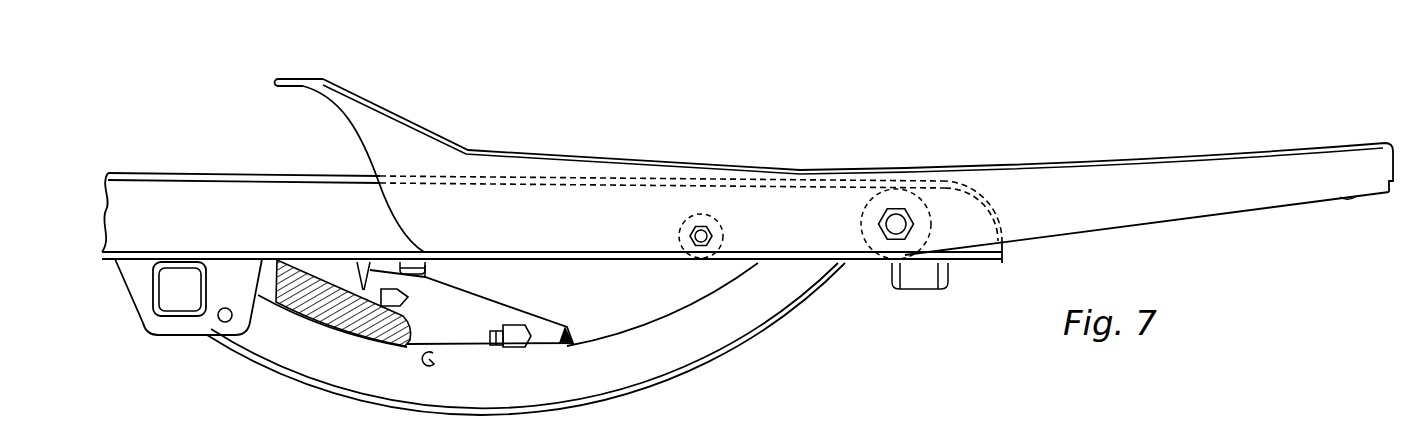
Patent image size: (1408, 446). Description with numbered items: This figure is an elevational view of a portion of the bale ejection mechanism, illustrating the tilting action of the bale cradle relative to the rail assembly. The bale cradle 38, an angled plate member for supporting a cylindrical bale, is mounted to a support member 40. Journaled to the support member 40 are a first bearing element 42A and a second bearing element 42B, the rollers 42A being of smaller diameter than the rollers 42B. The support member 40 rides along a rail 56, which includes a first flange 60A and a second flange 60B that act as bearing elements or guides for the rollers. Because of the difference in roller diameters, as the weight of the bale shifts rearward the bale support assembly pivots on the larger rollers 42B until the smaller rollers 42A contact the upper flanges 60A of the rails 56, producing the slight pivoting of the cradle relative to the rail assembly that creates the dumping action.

The bale cradle 38 is at (1173, 152).
The support member 40 is at (1180, 198).
The first bearing element 42A is at (716, 212).
The second bearing element 42B is at (867, 190).
The rail 56 is at (270, 207).
The first flange 60A is at (303, 182).
The second flange 60B is at (140, 252).